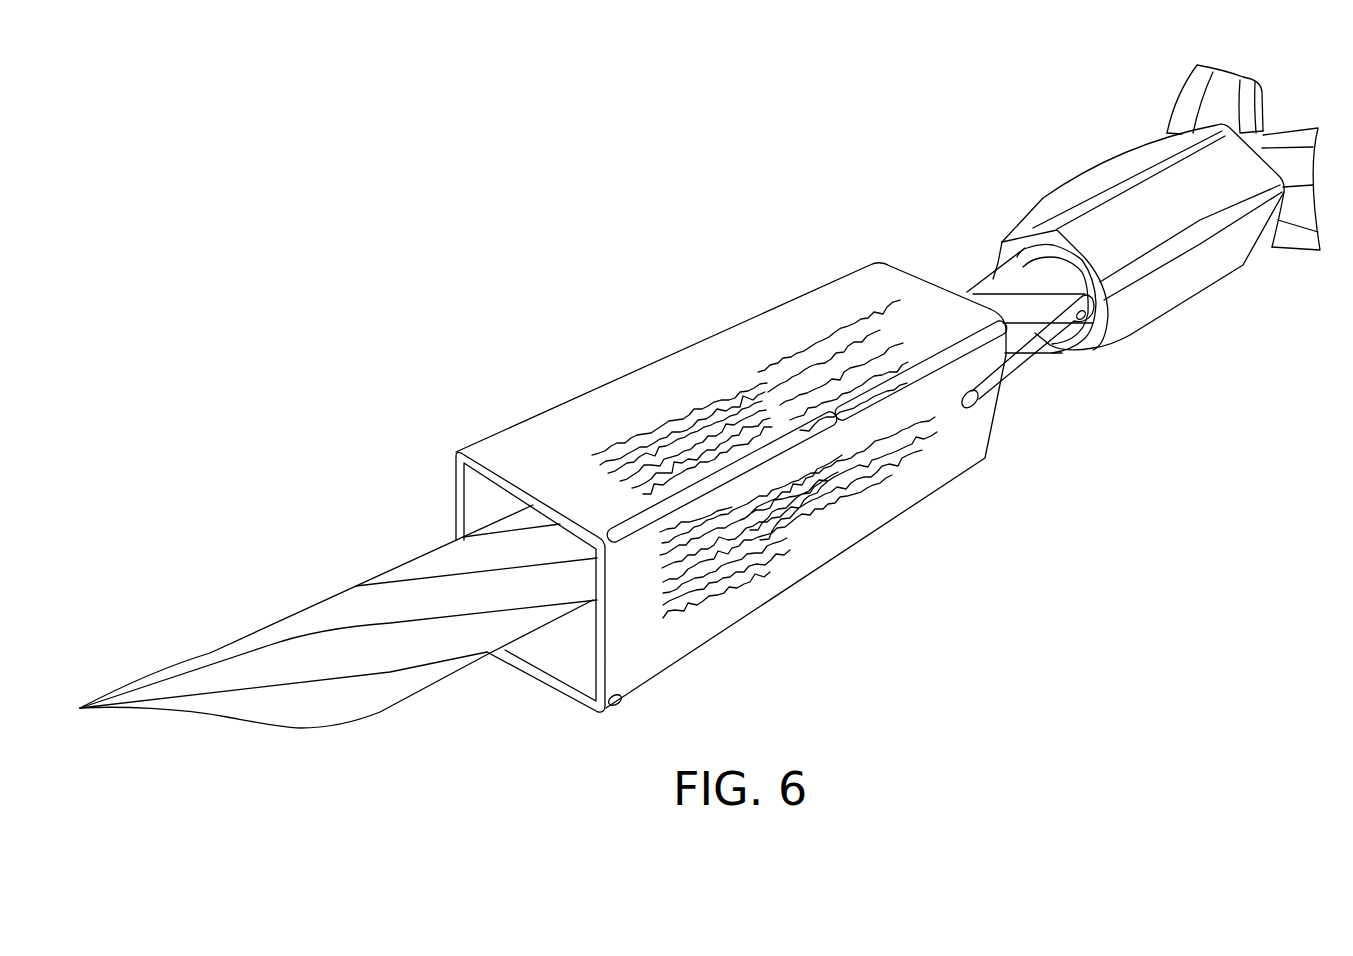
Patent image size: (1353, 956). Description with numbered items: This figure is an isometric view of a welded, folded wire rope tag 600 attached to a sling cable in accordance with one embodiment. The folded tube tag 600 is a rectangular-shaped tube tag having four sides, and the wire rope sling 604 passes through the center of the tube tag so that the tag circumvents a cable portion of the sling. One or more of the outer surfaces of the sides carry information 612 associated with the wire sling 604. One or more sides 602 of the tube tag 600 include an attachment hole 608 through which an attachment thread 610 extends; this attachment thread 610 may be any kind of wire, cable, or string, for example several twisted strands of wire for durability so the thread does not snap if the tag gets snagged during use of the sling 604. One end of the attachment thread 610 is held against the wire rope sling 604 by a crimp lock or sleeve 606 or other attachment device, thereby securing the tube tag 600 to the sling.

The folded tube tag 600 is at (895, 214).
The side of the tube tag 602 is at (660, 637).
The wire rope sling 604 is at (397, 677).
The crimp lock or sleeve 606 is at (1145, 310).
The attachment hole 608 is at (967, 410).
The attachment thread 610 is at (1015, 373).
The information 612 is at (603, 405).